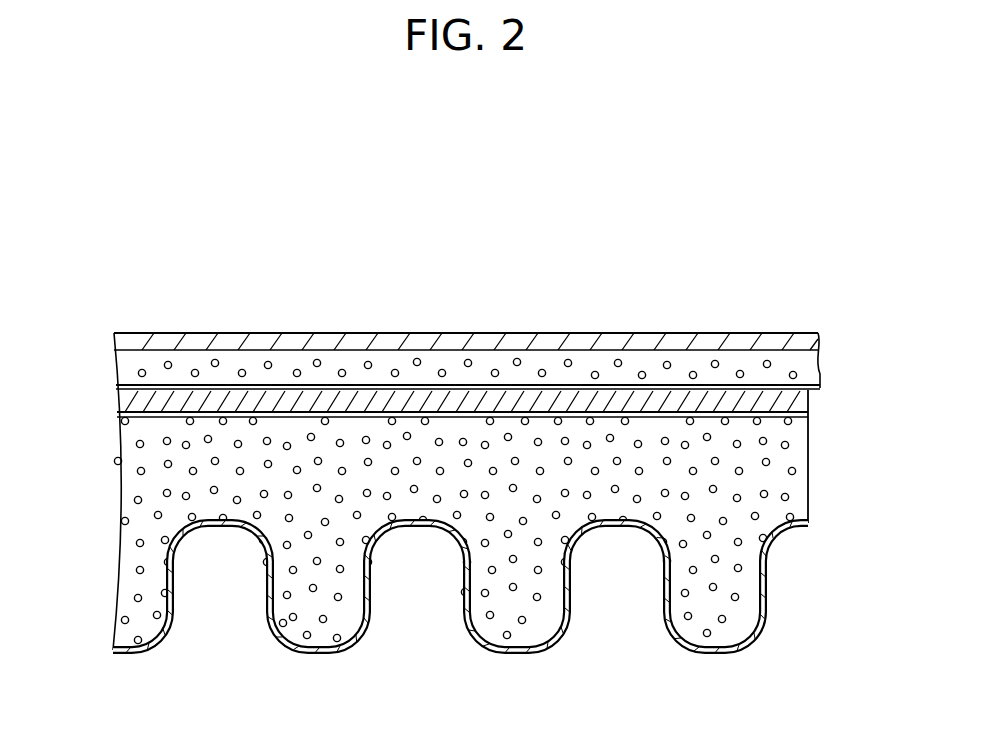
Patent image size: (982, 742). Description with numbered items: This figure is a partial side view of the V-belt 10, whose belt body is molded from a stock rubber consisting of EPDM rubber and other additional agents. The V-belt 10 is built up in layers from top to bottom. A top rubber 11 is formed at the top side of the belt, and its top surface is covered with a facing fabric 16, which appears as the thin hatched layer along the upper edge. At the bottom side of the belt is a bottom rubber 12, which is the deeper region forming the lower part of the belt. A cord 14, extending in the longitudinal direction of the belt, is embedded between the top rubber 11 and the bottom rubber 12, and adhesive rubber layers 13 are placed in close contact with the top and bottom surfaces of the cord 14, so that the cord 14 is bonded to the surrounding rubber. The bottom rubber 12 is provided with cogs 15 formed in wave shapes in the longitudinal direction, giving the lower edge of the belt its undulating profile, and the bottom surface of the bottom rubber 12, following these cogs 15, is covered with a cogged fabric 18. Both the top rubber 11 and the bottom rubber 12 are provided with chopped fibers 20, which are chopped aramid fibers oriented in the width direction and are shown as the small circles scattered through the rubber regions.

The V-belt 10 is at (582, 310).
The top rubber 11 is at (820, 356).
The bottom rubber 12 is at (816, 459).
The adhesive rubber layers 13 is at (116, 388).
The cord 14 is at (816, 402).
The cogs 15 is at (756, 633).
The facing fabric 16 is at (157, 342).
The cogged fabric 18 is at (673, 645).
The chopped fibers 20 is at (418, 358).